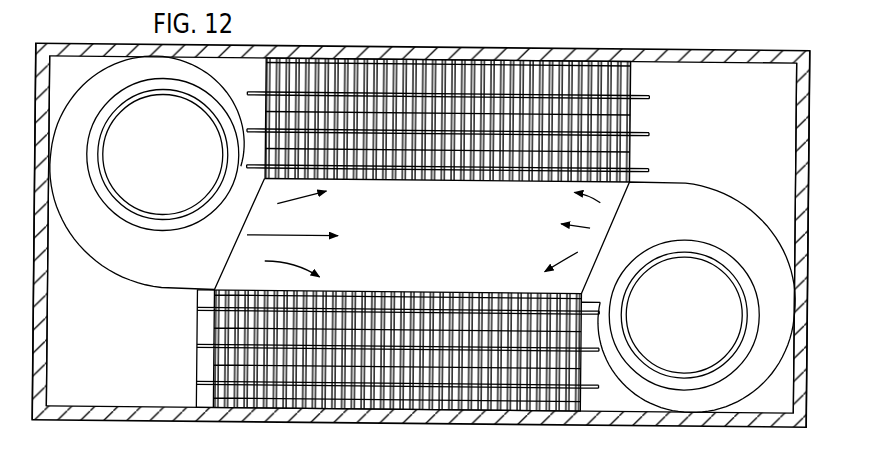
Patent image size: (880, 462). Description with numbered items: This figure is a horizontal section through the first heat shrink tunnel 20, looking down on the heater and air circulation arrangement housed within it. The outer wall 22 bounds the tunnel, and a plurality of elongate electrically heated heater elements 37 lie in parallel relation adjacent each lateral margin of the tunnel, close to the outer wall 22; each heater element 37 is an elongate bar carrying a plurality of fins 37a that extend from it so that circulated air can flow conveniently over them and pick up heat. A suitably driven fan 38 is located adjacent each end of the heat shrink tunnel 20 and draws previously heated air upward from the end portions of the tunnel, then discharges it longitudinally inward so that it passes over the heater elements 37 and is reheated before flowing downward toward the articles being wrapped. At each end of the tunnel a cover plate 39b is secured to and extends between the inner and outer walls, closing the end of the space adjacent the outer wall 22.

The first heat shrink tunnel 20 is at (430, 46).
The outer wall 22 is at (528, 50).
The heater element 37 is at (453, 181).
The fins 37a is at (505, 292).
The fan 38 is at (160, 222).
The cover plate 39b is at (48, 336).